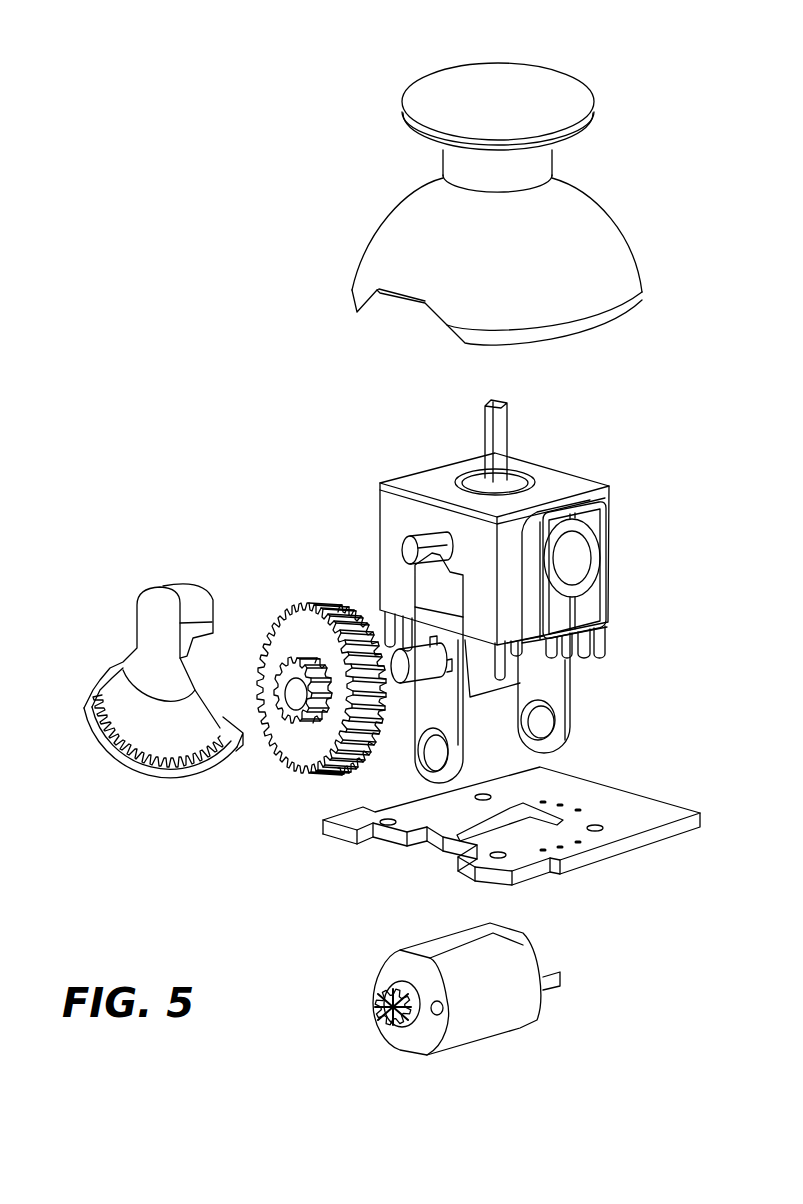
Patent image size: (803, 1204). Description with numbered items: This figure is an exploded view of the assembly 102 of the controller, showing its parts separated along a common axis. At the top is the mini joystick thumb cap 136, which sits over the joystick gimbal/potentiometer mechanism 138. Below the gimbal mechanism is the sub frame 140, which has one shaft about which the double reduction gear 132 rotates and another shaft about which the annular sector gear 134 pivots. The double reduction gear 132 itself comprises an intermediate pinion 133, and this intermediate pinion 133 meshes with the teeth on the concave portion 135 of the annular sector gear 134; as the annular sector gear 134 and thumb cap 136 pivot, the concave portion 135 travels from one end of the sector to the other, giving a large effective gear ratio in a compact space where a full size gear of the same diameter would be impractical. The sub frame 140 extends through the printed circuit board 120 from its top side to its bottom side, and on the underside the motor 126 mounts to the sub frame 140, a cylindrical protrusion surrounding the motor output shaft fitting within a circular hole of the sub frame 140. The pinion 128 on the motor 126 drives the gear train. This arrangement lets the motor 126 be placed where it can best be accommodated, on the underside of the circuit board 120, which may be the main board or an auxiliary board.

The assembly 102 is at (630, 52).
The mini joystick thumb cap 136 is at (422, 237).
The joystick gimbal/potentiometer mechanism 138 is at (570, 481).
The sub frame 140 is at (575, 738).
The double reduction gear 132 is at (312, 604).
The intermediate pinion 133 is at (310, 727).
The annular sector gear 134 is at (168, 585).
The concave portion 135 is at (120, 748).
The main printed circuit board 120 is at (628, 810).
The motor 126 is at (408, 950).
The pinion 128 is at (380, 992).